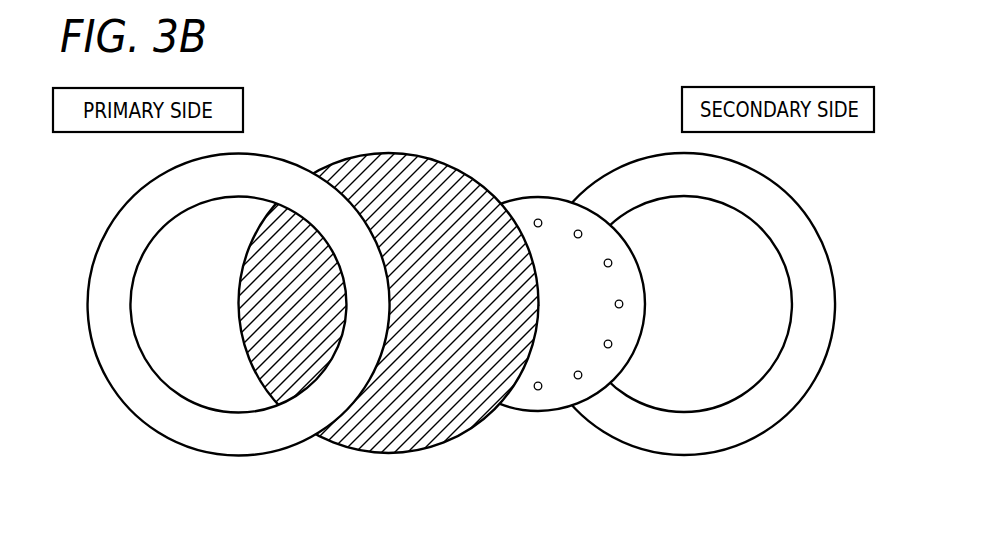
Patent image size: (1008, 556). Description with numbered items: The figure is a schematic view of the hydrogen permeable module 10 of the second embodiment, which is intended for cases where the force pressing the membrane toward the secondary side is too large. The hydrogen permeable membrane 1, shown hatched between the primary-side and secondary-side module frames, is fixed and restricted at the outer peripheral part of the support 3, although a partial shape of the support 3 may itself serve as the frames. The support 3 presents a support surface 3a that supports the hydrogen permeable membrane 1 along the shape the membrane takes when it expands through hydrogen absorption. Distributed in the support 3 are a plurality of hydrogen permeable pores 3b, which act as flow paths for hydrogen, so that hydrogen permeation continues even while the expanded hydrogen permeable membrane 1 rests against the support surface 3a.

The hydrogen permeable membrane 1 is at (395, 153).
The support 3 is at (538, 307).
The support surface 3a is at (557, 258).
The hydrogen permeable pore 3b is at (541, 390).
The hydrogen permeable module 10 is at (703, 344).